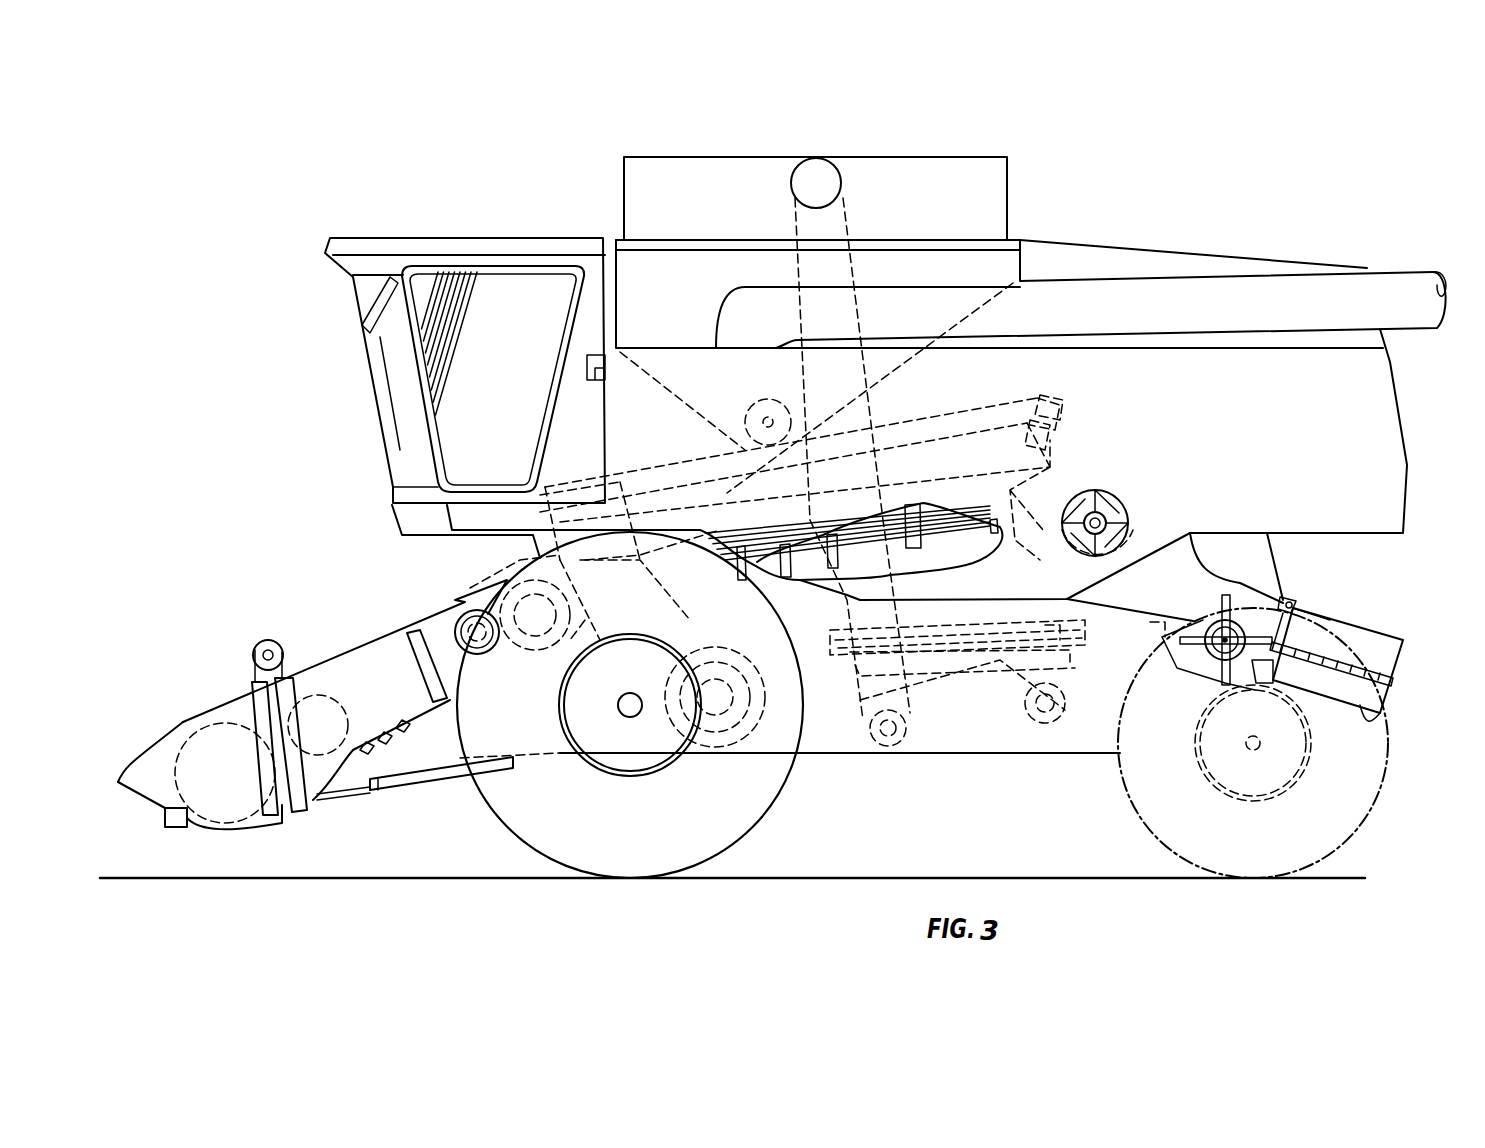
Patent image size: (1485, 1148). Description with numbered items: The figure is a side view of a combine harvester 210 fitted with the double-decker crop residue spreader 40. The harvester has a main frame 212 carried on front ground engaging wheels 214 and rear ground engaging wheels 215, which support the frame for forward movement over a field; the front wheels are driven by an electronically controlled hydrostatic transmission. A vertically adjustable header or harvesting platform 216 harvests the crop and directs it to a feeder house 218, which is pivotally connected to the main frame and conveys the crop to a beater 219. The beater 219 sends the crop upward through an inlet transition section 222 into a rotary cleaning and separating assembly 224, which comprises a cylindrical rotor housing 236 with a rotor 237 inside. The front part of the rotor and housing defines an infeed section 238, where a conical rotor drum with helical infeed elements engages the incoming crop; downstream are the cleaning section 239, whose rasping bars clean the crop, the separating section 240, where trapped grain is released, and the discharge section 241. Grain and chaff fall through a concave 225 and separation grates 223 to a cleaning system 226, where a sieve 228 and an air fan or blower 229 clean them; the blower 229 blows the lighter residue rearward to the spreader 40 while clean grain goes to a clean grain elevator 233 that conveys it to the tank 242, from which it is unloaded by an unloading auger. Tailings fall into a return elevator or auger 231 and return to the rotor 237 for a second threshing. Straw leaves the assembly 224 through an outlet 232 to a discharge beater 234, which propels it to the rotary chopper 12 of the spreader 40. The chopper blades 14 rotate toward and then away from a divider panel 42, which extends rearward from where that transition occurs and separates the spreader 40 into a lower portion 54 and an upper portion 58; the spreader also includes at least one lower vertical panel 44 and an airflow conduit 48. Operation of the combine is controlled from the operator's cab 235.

The combine harvester 210 is at (1349, 133).
The main frame 212 is at (1408, 466).
The tank 242 is at (1022, 267).
The operator's cab 235 is at (470, 236).
The infeed section 238 is at (575, 480).
The inlet transition section 222 is at (513, 560).
The beater 219 is at (500, 577).
The front ground engaging wheels 214 is at (477, 613).
The header or harvesting platform 216 is at (180, 703).
The feeder house 218 is at (373, 655).
The air fan or blower 229 is at (709, 745).
The concave 225 is at (737, 592).
The rotary cleaning and separating assembly 224 is at (710, 487).
The separating section 240 is at (905, 418).
The cleaning section 239 is at (725, 455).
The clean grain elevator 233 is at (862, 334).
The cylindrical rotor housing 236 is at (997, 392).
The discharge section 241 is at (1042, 384).
The rotor 237 is at (1010, 412).
The outlet 232 is at (1074, 453).
The discharge beater 234 is at (1133, 507).
The chopper blades 14 is at (1193, 621).
The separation grates 223 is at (931, 549).
The cleaning system 226 is at (980, 633).
The sieve 228 is at (1068, 644).
The return elevator or auger 231 is at (1045, 722).
The chopper 12 is at (1233, 586).
The double-decker crop residue spreader 40 is at (1300, 580).
The upper portion 58 is at (1359, 618).
The airflow conduit 48 is at (1397, 638).
The divider panel 42 is at (1397, 666).
The lower vertical panel 44 is at (1368, 710).
The lower portion 54 is at (1334, 706).
The rear ground engaging wheels 215 is at (1375, 803).